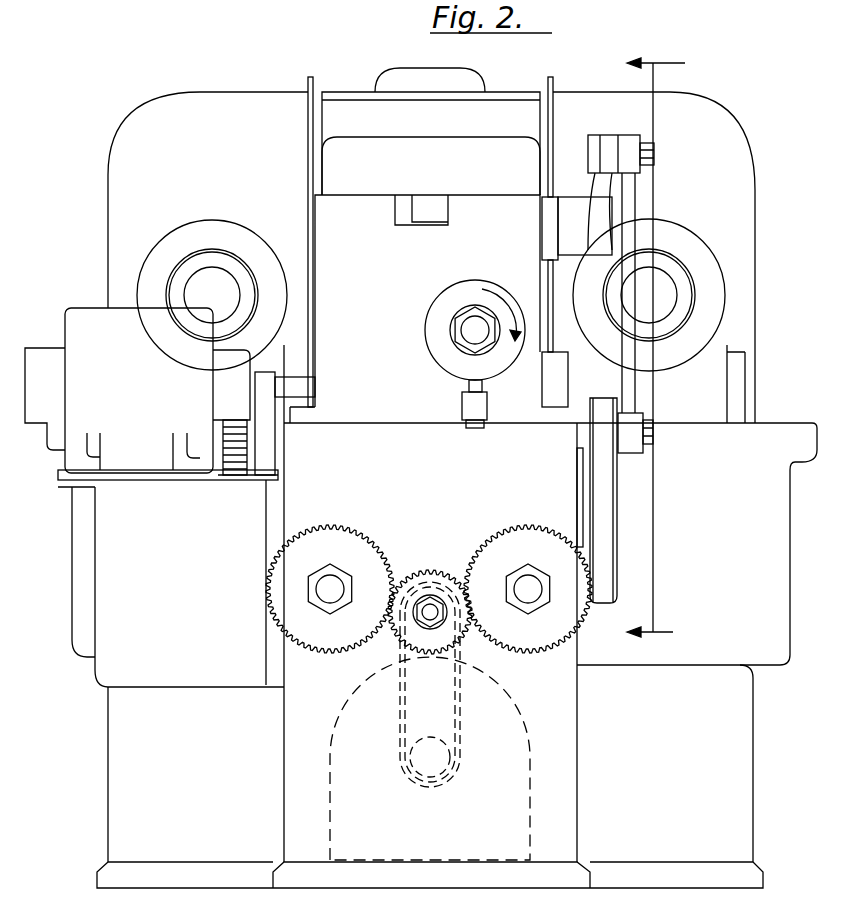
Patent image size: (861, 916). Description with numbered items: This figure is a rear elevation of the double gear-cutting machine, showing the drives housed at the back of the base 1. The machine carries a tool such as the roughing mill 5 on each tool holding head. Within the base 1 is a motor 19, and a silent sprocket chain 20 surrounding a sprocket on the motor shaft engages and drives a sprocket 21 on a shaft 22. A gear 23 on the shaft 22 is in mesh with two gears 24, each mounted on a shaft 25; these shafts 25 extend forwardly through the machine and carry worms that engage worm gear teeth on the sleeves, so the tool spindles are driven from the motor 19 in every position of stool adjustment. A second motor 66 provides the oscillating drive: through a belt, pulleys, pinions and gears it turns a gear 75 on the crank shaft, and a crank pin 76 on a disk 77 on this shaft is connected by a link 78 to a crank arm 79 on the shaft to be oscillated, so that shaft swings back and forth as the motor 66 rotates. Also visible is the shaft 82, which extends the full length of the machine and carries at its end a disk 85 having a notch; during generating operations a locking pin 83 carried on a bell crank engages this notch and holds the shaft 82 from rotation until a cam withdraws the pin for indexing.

The base 1 is at (733, 713).
The roughing mill 5 is at (642, 349).
The motor 19 is at (530, 786).
The silent sprocket chain 20 is at (398, 722).
The sprocket 21 is at (447, 665).
The shaft 22 is at (440, 586).
The gear 23 is at (400, 568).
The gear 24 is at (344, 524).
The shaft 25 is at (333, 597).
The motor 66 is at (88, 323).
The gear 75 is at (248, 456).
The crank pin 76 is at (656, 437).
The disk 77 is at (608, 527).
The link 78 is at (630, 203).
The crank arm 79 is at (609, 137).
The shaft 82 is at (452, 320).
The locking pin 83 is at (462, 398).
The disk 85 is at (481, 281).